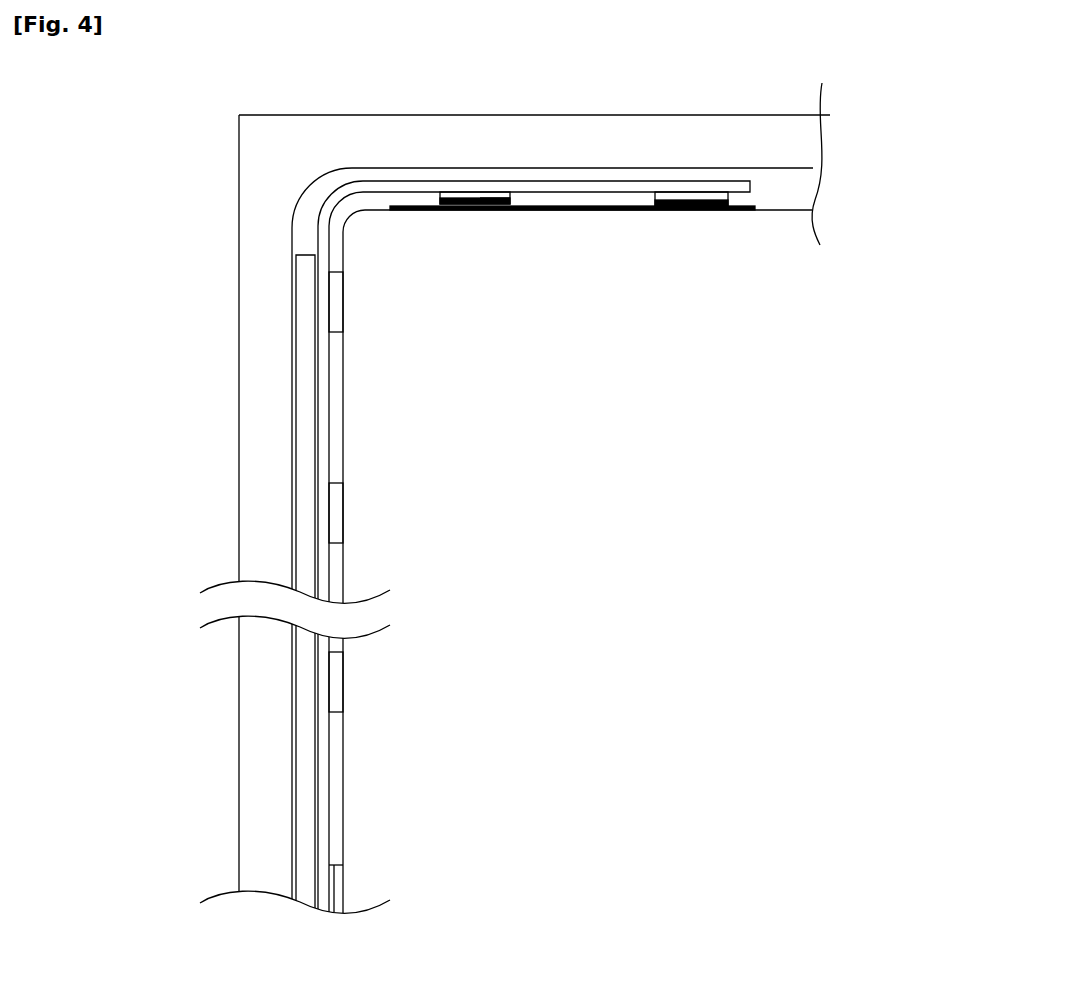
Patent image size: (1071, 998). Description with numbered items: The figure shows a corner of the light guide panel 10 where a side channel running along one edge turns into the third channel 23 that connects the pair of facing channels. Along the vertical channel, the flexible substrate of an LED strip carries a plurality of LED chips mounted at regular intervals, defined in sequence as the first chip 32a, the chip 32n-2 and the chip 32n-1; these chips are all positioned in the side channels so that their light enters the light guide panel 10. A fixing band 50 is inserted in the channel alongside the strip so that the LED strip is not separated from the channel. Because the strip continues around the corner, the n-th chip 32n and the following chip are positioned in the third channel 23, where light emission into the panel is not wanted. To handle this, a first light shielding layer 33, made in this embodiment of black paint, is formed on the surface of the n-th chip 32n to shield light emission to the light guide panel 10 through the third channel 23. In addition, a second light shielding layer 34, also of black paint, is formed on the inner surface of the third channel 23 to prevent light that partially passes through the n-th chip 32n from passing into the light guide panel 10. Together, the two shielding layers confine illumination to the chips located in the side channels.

The light guide panel 10 is at (690, 528).
The third channel 23 is at (777, 185).
The first chip 32a is at (333, 890).
The (n-2)-th chip 32n-2 is at (335, 515).
The (n-1)-th chip 32n-1 is at (335, 300).
The n-th chip 32n is at (472, 197).
The first light shielding layer 33 is at (493, 201).
The second light shielding layer 34 is at (593, 212).
The first fixing band 50 is at (300, 388).